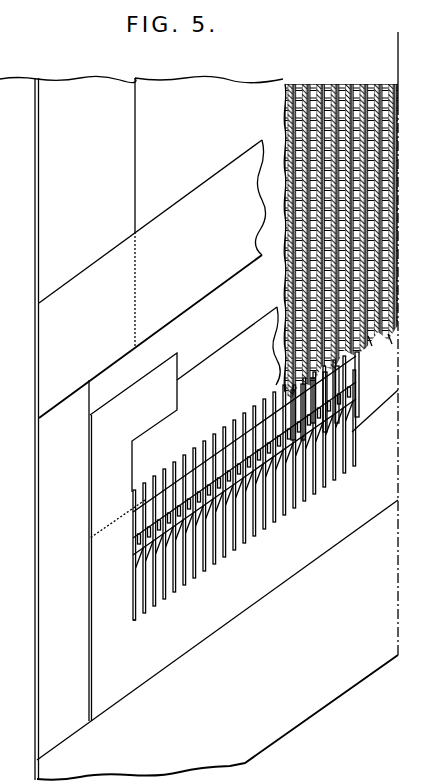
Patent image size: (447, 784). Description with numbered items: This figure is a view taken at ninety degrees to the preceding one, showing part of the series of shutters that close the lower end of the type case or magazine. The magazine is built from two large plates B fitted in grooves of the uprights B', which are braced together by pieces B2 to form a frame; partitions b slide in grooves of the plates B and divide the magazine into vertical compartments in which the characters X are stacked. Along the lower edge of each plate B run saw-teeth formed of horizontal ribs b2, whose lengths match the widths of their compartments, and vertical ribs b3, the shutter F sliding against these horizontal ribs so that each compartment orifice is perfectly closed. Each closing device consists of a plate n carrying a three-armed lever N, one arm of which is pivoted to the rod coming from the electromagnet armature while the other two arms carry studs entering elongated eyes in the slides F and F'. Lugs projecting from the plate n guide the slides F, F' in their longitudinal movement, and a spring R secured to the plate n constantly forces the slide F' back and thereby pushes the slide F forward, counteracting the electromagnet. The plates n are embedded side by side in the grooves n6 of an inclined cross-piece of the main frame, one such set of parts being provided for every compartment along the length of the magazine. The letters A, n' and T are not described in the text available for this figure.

The woven fabric A is at (19, 429).
The upright B' is at (86, 211).
The plate of the type case or magazine B is at (161, 189).
The bracing piece B2 is at (152, 279).
The partition b is at (341, 253).
The horizontal rib b2 is at (375, 349).
The vertical rib b3 is at (398, 348).
The character X is at (358, 208).
The three-armed lever N is at (133, 493).
The slide F is at (232, 437).
The slide F' is at (232, 480).
The plate n is at (239, 497).
The needle eyes n' is at (246, 452).
The groove n6 is at (120, 583).
The spring R is at (253, 494).
The table T is at (217, 406).